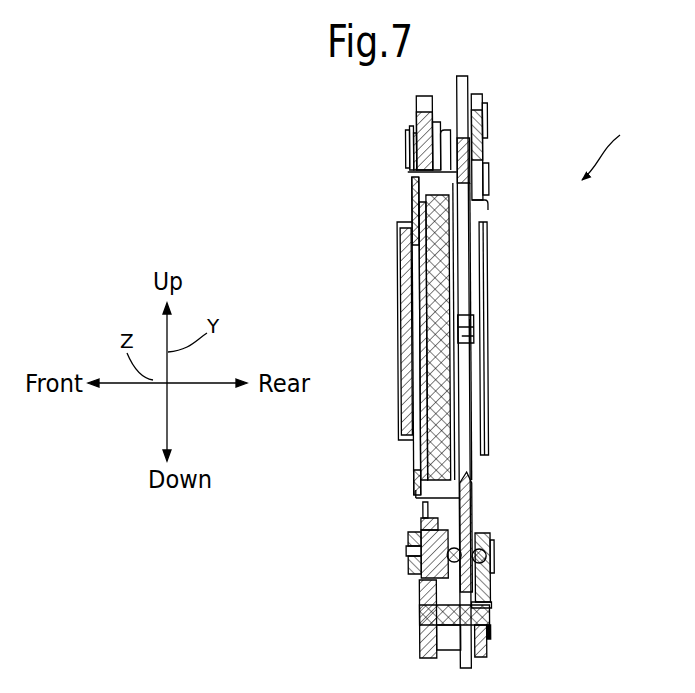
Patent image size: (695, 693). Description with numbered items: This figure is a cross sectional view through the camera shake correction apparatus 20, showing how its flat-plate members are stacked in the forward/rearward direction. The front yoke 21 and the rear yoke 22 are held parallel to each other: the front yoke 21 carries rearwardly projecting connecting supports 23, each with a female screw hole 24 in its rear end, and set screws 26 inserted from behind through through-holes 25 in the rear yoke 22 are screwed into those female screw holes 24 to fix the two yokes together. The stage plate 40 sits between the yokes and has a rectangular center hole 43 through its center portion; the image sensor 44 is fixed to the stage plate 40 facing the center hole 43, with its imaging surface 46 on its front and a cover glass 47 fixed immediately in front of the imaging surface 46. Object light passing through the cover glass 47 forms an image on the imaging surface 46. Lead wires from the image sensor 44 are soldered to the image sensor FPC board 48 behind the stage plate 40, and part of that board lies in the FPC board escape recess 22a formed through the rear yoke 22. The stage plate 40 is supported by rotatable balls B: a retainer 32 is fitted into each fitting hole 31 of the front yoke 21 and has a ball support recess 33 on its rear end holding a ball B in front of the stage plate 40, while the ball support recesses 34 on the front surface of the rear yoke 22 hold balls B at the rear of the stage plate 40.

The camera shake correction apparatus 20 is at (617, 150).
The front yoke 21 is at (415, 121).
The rear yoke 22 is at (486, 176).
The FPC board escape recess 22a is at (481, 203).
The connecting support 23 is at (405, 148).
The female screw hole 24 is at (491, 618).
The through-hole 25 is at (491, 632).
The set screw 26 is at (490, 610).
The fitting hole 31 is at (425, 578).
The retainer 32 is at (410, 538).
The ball support recess 33 is at (407, 560).
The ball support recess 34 is at (492, 547).
The stage plate 40 is at (470, 80).
The center hole 43 is at (469, 472).
The image sensor 44 is at (440, 345).
The imaging surface 46 is at (411, 292).
The cover glass 47 is at (408, 244).
The image sensor FPC board 48 is at (487, 394).
The rotatable ball B is at (465, 533).